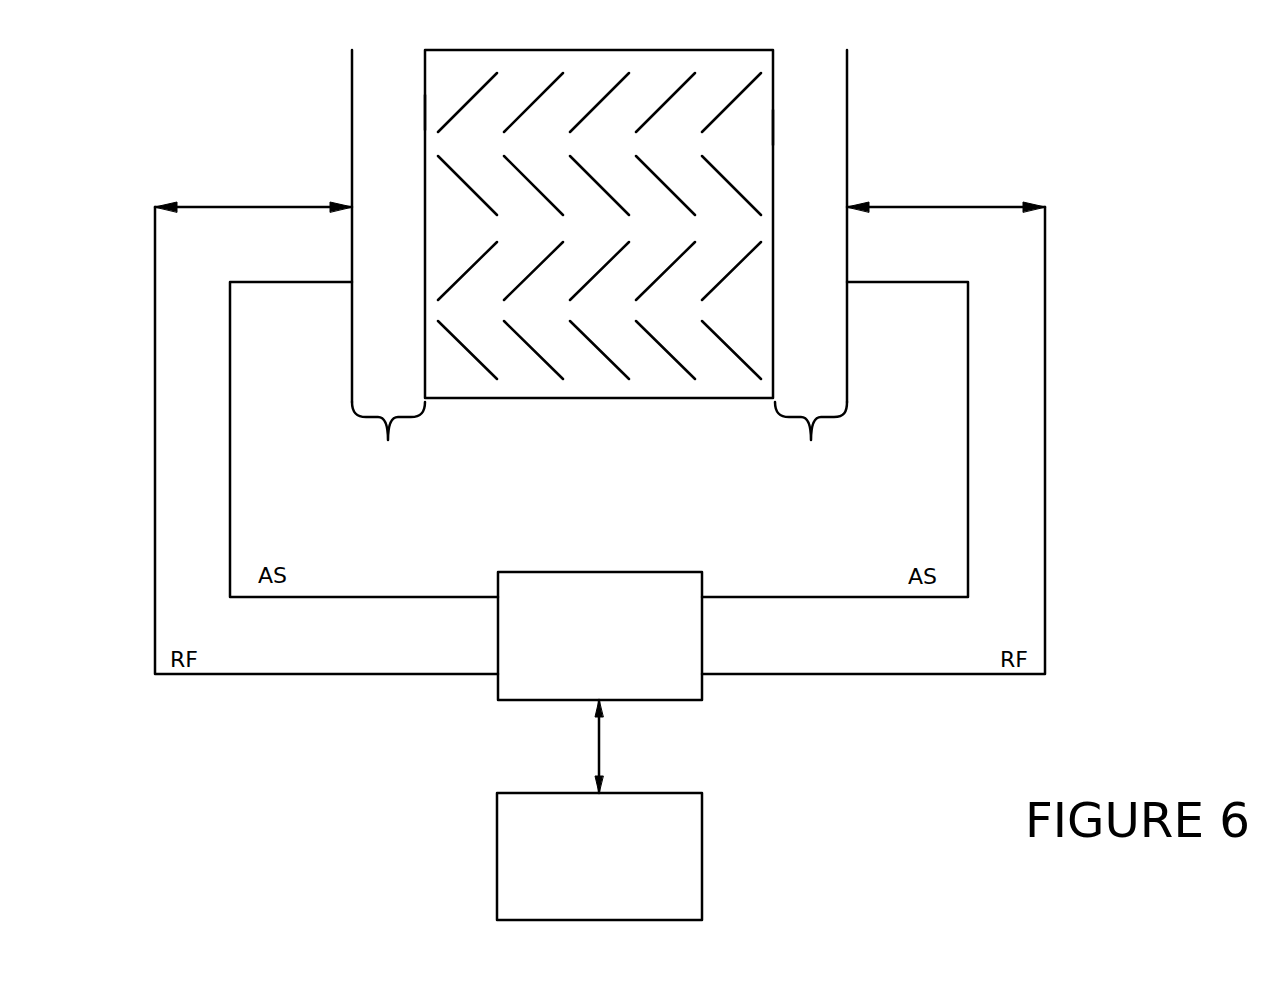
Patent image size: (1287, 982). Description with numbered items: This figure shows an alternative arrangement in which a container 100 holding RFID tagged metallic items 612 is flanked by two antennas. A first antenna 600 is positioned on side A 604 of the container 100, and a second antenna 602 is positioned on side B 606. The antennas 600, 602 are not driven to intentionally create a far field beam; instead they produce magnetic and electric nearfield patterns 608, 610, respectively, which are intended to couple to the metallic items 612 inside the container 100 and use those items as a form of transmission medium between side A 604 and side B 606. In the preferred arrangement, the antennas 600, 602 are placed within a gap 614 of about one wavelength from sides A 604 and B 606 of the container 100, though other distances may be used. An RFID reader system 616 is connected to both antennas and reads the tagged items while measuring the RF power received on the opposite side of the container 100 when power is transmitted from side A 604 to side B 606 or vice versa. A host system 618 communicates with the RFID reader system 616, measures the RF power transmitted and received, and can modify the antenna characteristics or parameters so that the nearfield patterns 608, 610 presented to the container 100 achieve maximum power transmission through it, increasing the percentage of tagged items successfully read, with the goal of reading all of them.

The container 100 is at (613, 57).
The first antenna 600 is at (352, 100).
The second antenna 602 is at (848, 92).
The side A 604 is at (425, 100).
The side B 606 is at (774, 113).
The nearfield pattern 608 is at (292, 207).
The nearfield pattern 610 is at (955, 205).
The metallic items 612 is at (537, 97).
The gap 614 is at (599, 436).
The RFID reader system 616 is at (620, 570).
The host system 618 is at (638, 790).